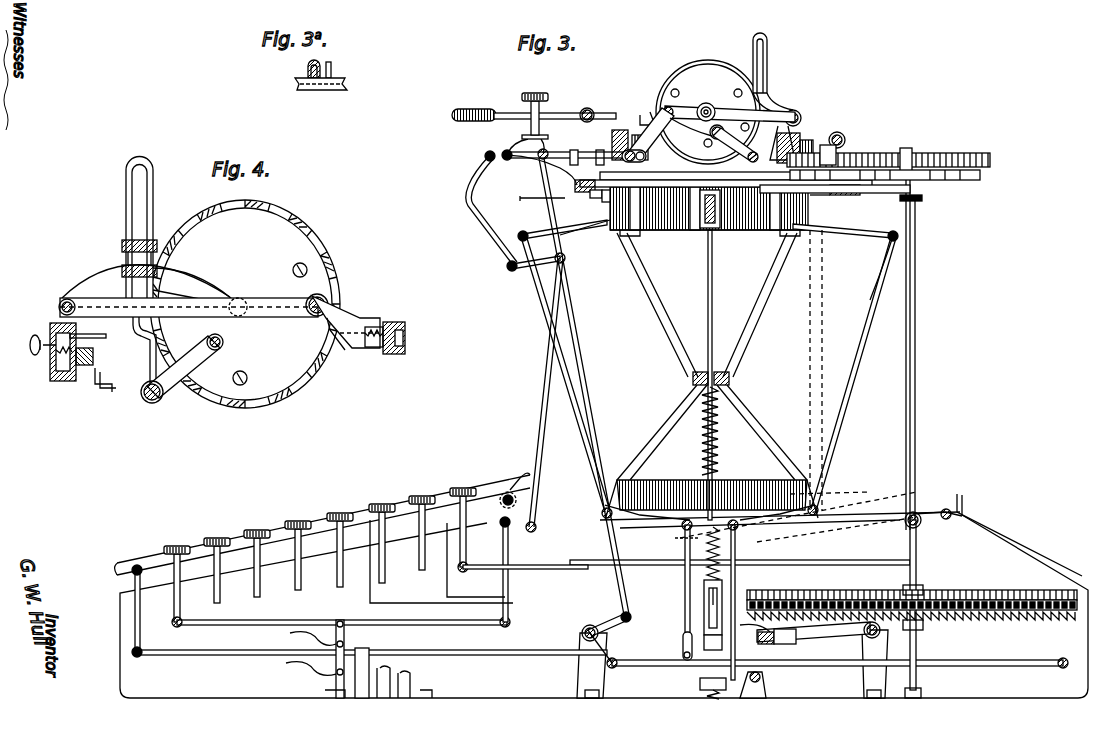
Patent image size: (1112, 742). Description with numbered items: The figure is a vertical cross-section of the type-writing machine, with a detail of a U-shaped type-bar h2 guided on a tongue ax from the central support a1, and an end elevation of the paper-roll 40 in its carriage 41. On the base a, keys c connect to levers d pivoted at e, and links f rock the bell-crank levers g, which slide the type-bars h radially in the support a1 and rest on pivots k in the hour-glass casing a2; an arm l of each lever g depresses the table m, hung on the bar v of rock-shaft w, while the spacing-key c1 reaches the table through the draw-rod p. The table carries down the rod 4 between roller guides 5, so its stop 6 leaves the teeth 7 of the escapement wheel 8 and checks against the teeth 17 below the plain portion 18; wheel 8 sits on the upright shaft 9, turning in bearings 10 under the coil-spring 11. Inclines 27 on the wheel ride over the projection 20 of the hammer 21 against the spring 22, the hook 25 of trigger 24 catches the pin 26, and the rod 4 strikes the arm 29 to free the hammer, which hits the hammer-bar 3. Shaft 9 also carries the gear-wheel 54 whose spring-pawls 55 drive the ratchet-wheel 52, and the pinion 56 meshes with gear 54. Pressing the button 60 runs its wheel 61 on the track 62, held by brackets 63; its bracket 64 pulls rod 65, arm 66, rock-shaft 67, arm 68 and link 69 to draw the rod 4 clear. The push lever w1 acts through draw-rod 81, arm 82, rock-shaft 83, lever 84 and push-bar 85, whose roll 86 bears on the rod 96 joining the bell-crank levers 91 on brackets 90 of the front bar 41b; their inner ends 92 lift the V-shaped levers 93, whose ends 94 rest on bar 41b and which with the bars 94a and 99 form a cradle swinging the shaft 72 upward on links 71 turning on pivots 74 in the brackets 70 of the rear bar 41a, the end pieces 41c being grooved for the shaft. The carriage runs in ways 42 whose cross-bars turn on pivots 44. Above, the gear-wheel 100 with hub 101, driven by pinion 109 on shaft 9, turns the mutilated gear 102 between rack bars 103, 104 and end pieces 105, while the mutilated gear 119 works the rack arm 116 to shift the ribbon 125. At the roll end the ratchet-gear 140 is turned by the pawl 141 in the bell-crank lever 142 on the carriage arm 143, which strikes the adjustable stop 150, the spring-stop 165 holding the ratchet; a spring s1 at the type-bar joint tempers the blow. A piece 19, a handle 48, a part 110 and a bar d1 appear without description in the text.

In FIG. 3, the hammer-bar 3 is at (718, 440).
In FIG. 3, the rod 4 is at (701, 555).
In FIG. 3, the guides 5 is at (724, 580).
In FIG. 3, the stop 6 is at (720, 608).
In FIG. 3, the teeth 7 is at (1010, 590).
In FIG. 3, the escapement gear-wheel 8 is at (950, 615).
In FIG. 3, the shaft 9 is at (873, 350).
In FIG. 3, the bearings 10 is at (929, 641).
In FIG. 3, the coil-spring 11 is at (980, 175).
In FIG. 3, the second set of teeth 17 is at (1078, 613).
In FIG. 3, the plain portion 18 is at (1078, 597).
In FIG. 3, the bracket 19 is at (732, 684).
In FIG. 3, the projection 20 is at (816, 626).
In FIG. 3, the hammer 21 is at (857, 635).
In FIG. 3, the spring 22 is at (850, 636).
In FIG. 3, the trigger 24 is at (762, 677).
In FIG. 3, the hook 25 is at (766, 645).
In FIG. 3, the pin 26 is at (787, 643).
In FIG. 3, the inclines 27 is at (1034, 616).
In FIG. 3, the arm 29 is at (725, 697).
In FIG. 3, the paper-carrying roll 40 is at (708, 62).
In FIG. 3, the carriage 41 is at (630, 130).
In FIG. 4, the ways 42 is at (60, 330).
In FIG. 3, the ways 42 is at (612, 137).
In FIG. 3, the pivots 44 is at (845, 138).
In FIG. 3, the handle 48 is at (534, 124).
In FIG. 3, the ratchet-wheel 52 is at (965, 153).
In FIG. 3, the gear-wheel 54 is at (992, 160).
In FIG. 3, the spring-pawls 55 is at (988, 153).
In FIG. 3, the pinion 56 is at (827, 154).
In FIG. 3, the button 60 is at (535, 91).
In FIG. 3, the small wheel 61 is at (530, 126).
In FIG. 3, the guide-track 62 is at (546, 128).
In FIG. 3, the brackets 63 is at (506, 152).
In FIG. 3, the bracket 64 is at (542, 162).
In FIG. 3, the rod 65 is at (584, 351).
In FIG. 3, the arm 66 is at (617, 624).
In FIG. 3, the rock-shaft 67 is at (583, 625).
In FIG. 3, the arm 68 is at (588, 640).
In FIG. 3, the link 69 is at (614, 665).
In FIG. 3, the brackets 70 is at (779, 74).
In FIG. 3, the links 71 is at (729, 117).
In FIG. 3, the shaft 72 is at (708, 103).
In FIG. 3, the pivots 74 is at (801, 118).
In FIG. 3, the draw-rod 81 is at (547, 402).
In FIG. 3, the arm 82 is at (556, 243).
In FIG. 3, the rock-shaft 83 is at (528, 262).
In FIG. 3, the lever 84 is at (470, 200).
In FIG. 3, the push-bar 85 is at (604, 168).
In FIG. 3, the antifriction-roll 86 is at (648, 172).
In FIG. 3, the bracket 90 is at (690, 140).
In FIG. 3, the bell-crank lever 91 is at (656, 124).
In FIG. 3, the inner end of lever 92 is at (709, 126).
In FIG. 4, the V-shaped lever 93 is at (185, 366).
In FIG. 4, the end of lever 94 is at (245, 305).
In FIG. 4, the bar 94a is at (368, 322).
In FIG. 3, the bar 94a is at (645, 120).
In FIG. 3, the rod 96 is at (645, 159).
In FIG. 4, the frame 99 is at (158, 396).
In FIG. 3, the gear-wheel 100 is at (890, 192).
In FIG. 3, the hub 101 is at (599, 200).
In FIG. 3, the mutilated gear 102 is at (585, 222).
In FIG. 3, the front bar 103 is at (588, 200).
In FIG. 3, the back bar 104 is at (835, 198).
In FIG. 3, the end pieces 105 is at (575, 183).
In FIG. 3, the pinion 109 is at (922, 198).
In FIG. 3, the rod 110 is at (916, 184).
In FIG. 3, the projecting arm 116 is at (975, 181).
In FIG. 3, the mutilated gear 119 is at (961, 190).
In FIG. 3, the ribbon 125 is at (687, 172).
In FIG. 4, the ratchet-gear 140 is at (303, 218).
In FIG. 4, the pawl 141 is at (134, 192).
In FIG. 4, the bell-crank lever 142 is at (150, 205).
In FIG. 4, the arm 143 is at (170, 268).
In FIG. 4, the stop 150 is at (104, 392).
In FIG. 4, the spring-stop 165 is at (330, 297).
In FIG. 4, the rear bar 41a is at (94, 360).
In FIG. 4, the front bar 41b is at (352, 340).
In FIG. 4, the end pieces 41c is at (350, 348).
In FIG. 3, the base a is at (601, 585).
In FIG. 3A, the central support a1 is at (345, 86).
In FIG. 3, the central support a1 is at (726, 208).
In FIG. 3, the supporting casing a2 is at (711, 376).
In FIG. 3A, the tongues ax is at (332, 66).
In FIG. 3A, the U-shaped type-bar h2 is at (307, 68).
In FIG. 3, the keys c is at (320, 548).
In FIG. 3, the spacing-key c1 is at (137, 598).
In FIG. 3, the levers d is at (541, 586).
In FIG. 3, the bar d1 is at (600, 651).
In FIG. 3, the pivots e is at (476, 632).
In FIG. 3, the links f is at (503, 549).
In FIG. 3, the bell-crank levers g is at (548, 330).
In FIG. 3, the type-bars h is at (735, 227).
In FIG. 3, the pivots k is at (601, 514).
In FIG. 3, the arm l is at (628, 529).
In FIG. 3, the table m is at (676, 590).
In FIG. 3, the draw-rod p is at (683, 640).
In FIG. 3, the spring s1 is at (868, 248).
In FIG. 3, the bar v is at (925, 516).
In FIG. 3, the rock-shaft w is at (940, 519).
In FIG. 3, the push lever w1 is at (441, 561).